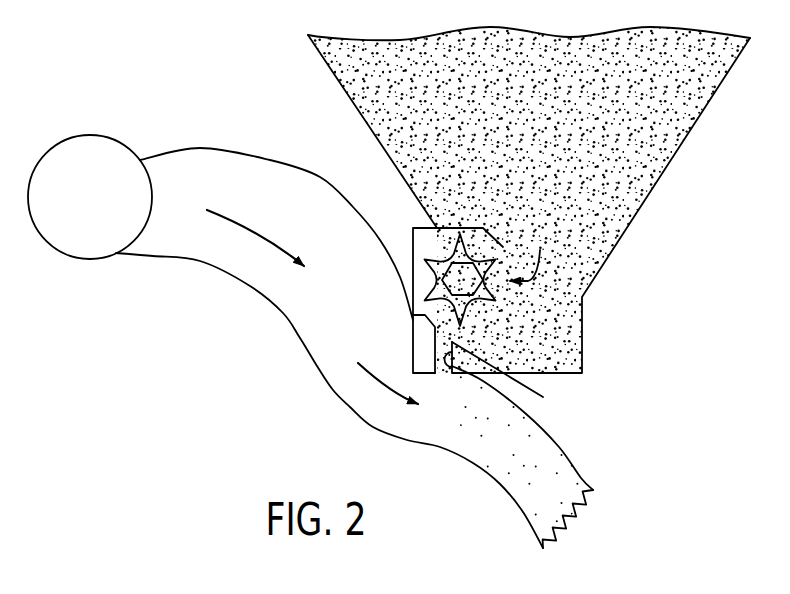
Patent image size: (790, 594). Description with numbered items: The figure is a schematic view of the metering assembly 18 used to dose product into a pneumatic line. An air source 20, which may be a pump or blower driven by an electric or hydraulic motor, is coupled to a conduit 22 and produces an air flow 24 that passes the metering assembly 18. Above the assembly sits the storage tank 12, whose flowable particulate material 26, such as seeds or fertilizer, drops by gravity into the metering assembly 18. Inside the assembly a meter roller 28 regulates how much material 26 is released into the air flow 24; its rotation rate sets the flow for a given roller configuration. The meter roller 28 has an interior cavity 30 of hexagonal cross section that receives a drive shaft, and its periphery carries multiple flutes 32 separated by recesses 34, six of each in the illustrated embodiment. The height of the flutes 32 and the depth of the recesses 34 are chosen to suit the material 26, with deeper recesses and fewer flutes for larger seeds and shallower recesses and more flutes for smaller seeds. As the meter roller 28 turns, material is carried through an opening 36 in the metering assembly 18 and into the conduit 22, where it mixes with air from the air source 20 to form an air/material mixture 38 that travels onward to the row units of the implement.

The storage tank 12 is at (330, 67).
The metering assembly 18 is at (396, 224).
The air source 20 is at (91, 134).
The conduit 22 is at (292, 327).
The air flow 24 is at (250, 229).
The flowable particulate material 26 is at (693, 128).
The meter roller 28 is at (531, 253).
The interior cavity 30 is at (433, 317).
The flutes 32 is at (413, 254).
The recesses 34 is at (496, 258).
The opening 36 is at (543, 397).
The air/material mixture 38 is at (500, 467).